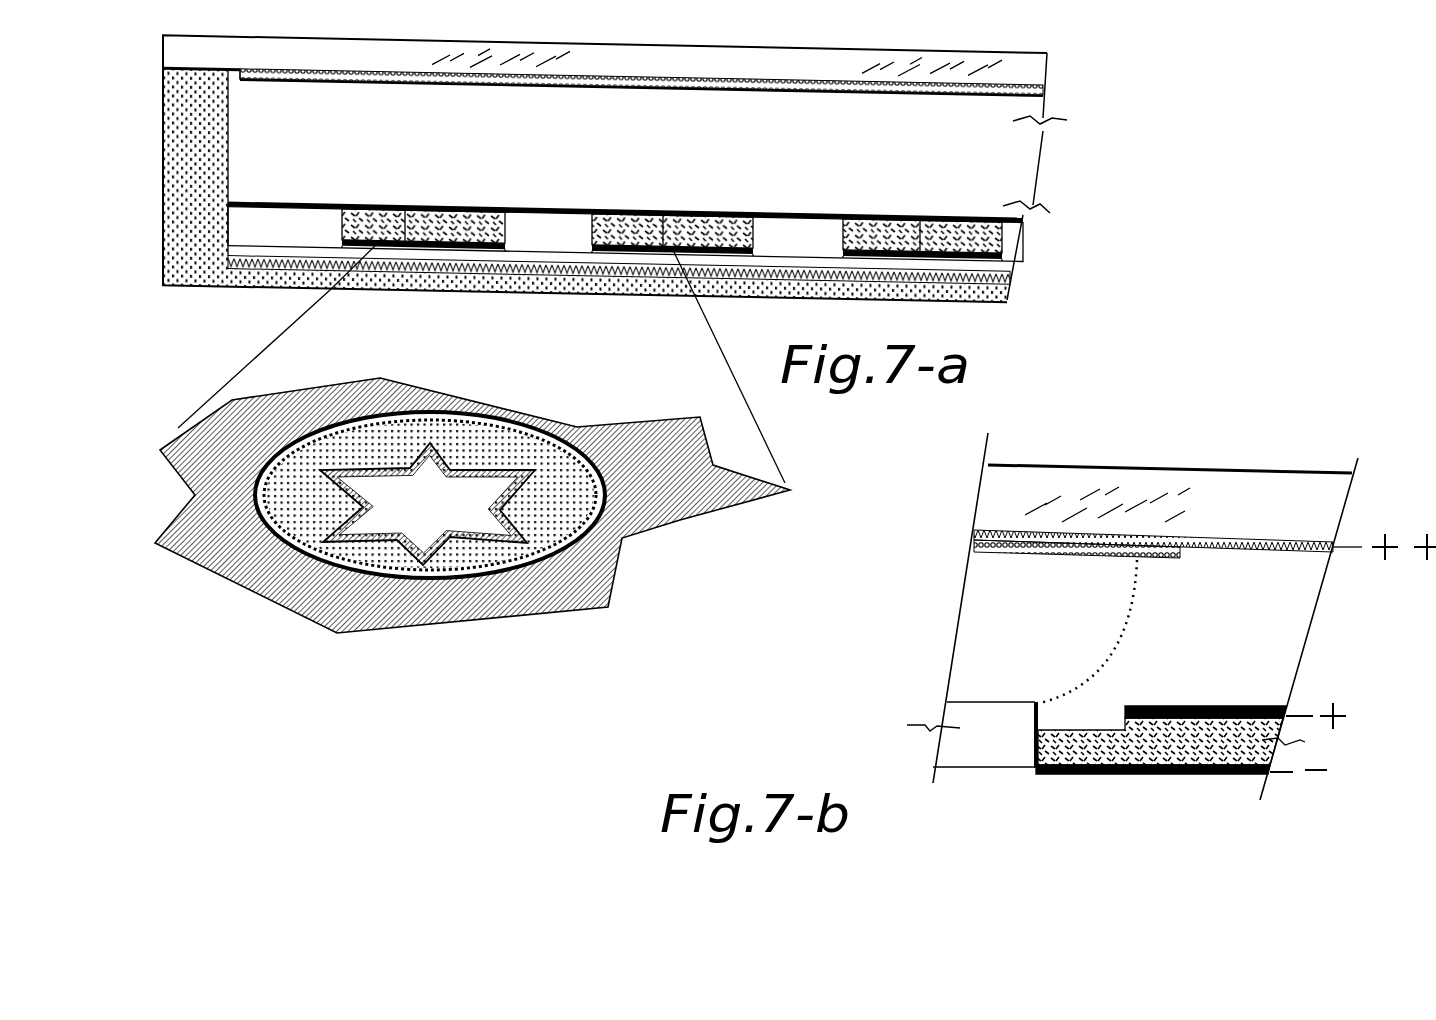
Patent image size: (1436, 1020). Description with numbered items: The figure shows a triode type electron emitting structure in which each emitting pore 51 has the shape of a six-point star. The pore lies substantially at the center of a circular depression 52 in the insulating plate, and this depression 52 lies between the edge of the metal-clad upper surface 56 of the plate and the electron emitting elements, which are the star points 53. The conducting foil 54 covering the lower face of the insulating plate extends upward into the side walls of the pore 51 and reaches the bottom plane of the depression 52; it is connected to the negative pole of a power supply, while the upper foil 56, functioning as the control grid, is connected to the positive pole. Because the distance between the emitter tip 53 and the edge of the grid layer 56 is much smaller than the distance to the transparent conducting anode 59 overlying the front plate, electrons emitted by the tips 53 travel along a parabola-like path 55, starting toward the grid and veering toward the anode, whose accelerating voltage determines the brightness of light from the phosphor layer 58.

In FIG. 7A, the emitting pore 51 is at (435, 510).
In FIG. 7B, the emitting pore 51 is at (1000, 733).
In FIG. 7A, the circular depression 52 is at (396, 443).
In FIG. 7B, the circular depression 52 is at (1105, 730).
In FIG. 7A, the star points 53 is at (572, 531).
In FIG. 7B, the star points 53 is at (1037, 703).
In FIG. 7B, the conducting foil 54 is at (1082, 768).
In FIG. 7B, the parabola-like path 55 is at (1138, 613).
In FIG. 7A, the metal-clad upper surface 56 is at (608, 447).
In FIG. 7B, the metal-clad upper surface 56 is at (1247, 710).
In FIG. 7B, the phosphor layer 58 is at (997, 553).
In FIG. 7B, the transparent conducting anode 59 is at (1302, 547).